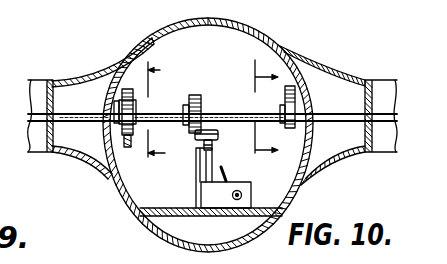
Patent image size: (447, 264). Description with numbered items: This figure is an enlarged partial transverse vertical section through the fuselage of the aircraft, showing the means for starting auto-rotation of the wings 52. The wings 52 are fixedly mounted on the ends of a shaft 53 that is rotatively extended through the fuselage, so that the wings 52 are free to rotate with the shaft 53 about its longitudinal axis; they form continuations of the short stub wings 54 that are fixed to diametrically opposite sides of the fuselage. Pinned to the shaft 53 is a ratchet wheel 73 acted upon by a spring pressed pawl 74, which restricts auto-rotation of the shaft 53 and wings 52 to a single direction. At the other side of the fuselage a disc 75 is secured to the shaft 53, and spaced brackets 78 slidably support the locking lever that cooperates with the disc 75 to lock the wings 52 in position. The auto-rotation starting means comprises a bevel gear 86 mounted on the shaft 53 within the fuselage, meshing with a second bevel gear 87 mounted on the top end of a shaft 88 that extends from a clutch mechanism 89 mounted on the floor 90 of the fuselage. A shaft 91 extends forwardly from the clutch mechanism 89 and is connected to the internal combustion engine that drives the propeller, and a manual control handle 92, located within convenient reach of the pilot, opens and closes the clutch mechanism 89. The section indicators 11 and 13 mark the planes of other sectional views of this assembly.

The section line 11- 11 is at (270, 114).
The section line 13- 13 is at (164, 115).
The wings 52 is at (33, 82).
The shaft 53 is at (80, 114).
The stub wings 54 is at (78, 166).
The ratchet wheel 73 is at (110, 176).
The spring pressed pawl 74 is at (137, 104).
The disc 75 is at (310, 68).
The brackets 78 is at (300, 100).
The bevel gear 86 is at (197, 95).
The second bevel gear 87 is at (211, 130).
The shaft 88 is at (212, 163).
The clutch mechanism 89 is at (208, 192).
The floor 90 is at (150, 230).
The shaft 91 is at (243, 195).
The manual control handle 92 is at (228, 170).